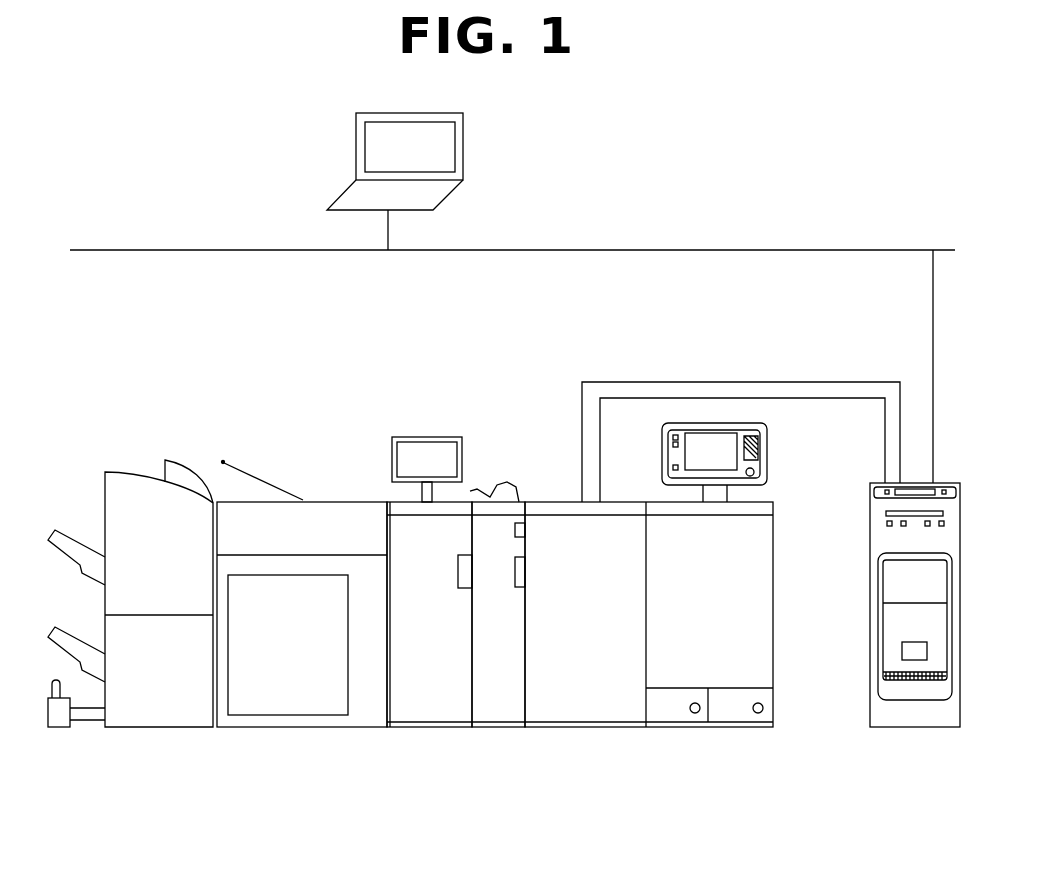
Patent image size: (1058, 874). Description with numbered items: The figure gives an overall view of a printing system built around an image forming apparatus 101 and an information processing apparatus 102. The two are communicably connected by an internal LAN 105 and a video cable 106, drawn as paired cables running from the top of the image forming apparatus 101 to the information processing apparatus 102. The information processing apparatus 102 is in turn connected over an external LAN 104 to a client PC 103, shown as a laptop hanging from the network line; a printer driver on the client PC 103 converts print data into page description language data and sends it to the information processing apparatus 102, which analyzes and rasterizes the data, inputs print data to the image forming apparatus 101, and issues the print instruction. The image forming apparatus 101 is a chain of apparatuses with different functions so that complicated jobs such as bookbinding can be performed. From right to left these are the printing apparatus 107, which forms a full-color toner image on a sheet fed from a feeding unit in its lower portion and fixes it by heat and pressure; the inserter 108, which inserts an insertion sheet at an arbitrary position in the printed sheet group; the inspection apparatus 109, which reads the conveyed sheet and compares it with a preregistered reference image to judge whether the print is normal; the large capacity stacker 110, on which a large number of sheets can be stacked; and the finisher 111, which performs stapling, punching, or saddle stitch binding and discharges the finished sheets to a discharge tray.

The image forming apparatus 101 is at (414, 636).
The information processing apparatus 102 is at (912, 727).
The client PC 103 is at (356, 130).
The external LAN 104 is at (765, 250).
The internal LAN 105 is at (823, 398).
The video cable 106 is at (778, 382).
The printing apparatus 107 is at (649, 644).
The inserter 108 is at (508, 727).
The inspection apparatus 109 is at (425, 727).
The large capacity stacker 110 is at (277, 727).
The finisher 111 is at (153, 727).